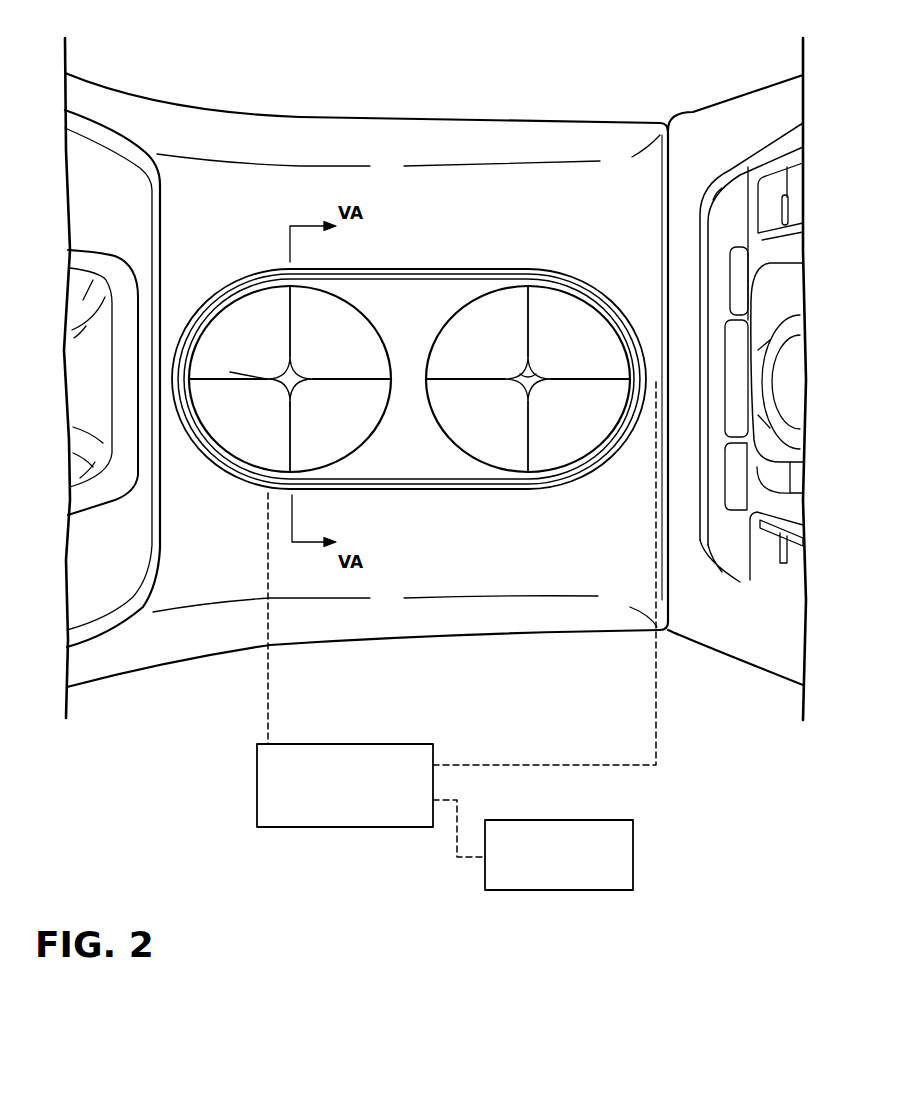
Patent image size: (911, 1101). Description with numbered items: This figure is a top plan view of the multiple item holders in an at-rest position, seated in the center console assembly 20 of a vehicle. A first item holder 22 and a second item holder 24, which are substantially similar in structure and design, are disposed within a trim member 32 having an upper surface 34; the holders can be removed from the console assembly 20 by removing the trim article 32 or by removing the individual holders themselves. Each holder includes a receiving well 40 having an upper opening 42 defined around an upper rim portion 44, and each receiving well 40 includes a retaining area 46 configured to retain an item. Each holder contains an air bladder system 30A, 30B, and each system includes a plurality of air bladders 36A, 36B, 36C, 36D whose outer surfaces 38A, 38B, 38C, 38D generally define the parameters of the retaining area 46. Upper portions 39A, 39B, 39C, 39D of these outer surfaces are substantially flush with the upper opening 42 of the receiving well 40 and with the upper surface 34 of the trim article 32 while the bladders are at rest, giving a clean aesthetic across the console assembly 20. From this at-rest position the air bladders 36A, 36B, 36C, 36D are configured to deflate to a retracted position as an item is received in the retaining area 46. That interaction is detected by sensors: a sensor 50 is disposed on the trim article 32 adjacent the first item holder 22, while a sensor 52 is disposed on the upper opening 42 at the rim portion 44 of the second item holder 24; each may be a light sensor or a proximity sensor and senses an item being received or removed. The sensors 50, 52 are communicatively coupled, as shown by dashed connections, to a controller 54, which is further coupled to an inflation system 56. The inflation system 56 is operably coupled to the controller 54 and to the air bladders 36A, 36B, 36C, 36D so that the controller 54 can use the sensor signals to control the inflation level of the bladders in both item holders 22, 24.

The console assembly 20 is at (600, 656).
The first item holder 22 is at (208, 262).
The second item holder 24 is at (508, 245).
The air bladder system 30A is at (203, 390).
The air bladder system 30B is at (565, 475).
The trim member 32 is at (404, 455).
The upper surface 34 is at (426, 455).
The air bladder 36A is at (230, 343).
The air bladder 36B is at (340, 337).
The air bladder 36C is at (170, 463).
The air bladder 36D is at (410, 453).
The outer surface 38A is at (278, 380).
The outer surface 38B is at (302, 372).
The outer surface 38C is at (280, 397).
The outer surface 38D is at (297, 393).
The upper portion 39A is at (468, 345).
The upper portion 39B is at (575, 342).
The upper portion 39C is at (468, 415).
The upper portion 39D is at (587, 416).
The receiving well 40 is at (452, 274).
The upper opening 42 is at (165, 444).
The upper rim portion 44 is at (177, 389).
The retaining area 46 is at (190, 367).
The sensor 50 is at (253, 478).
The sensor 52 is at (669, 300).
The controller 54 is at (345, 827).
The inflation system 56 is at (535, 891).